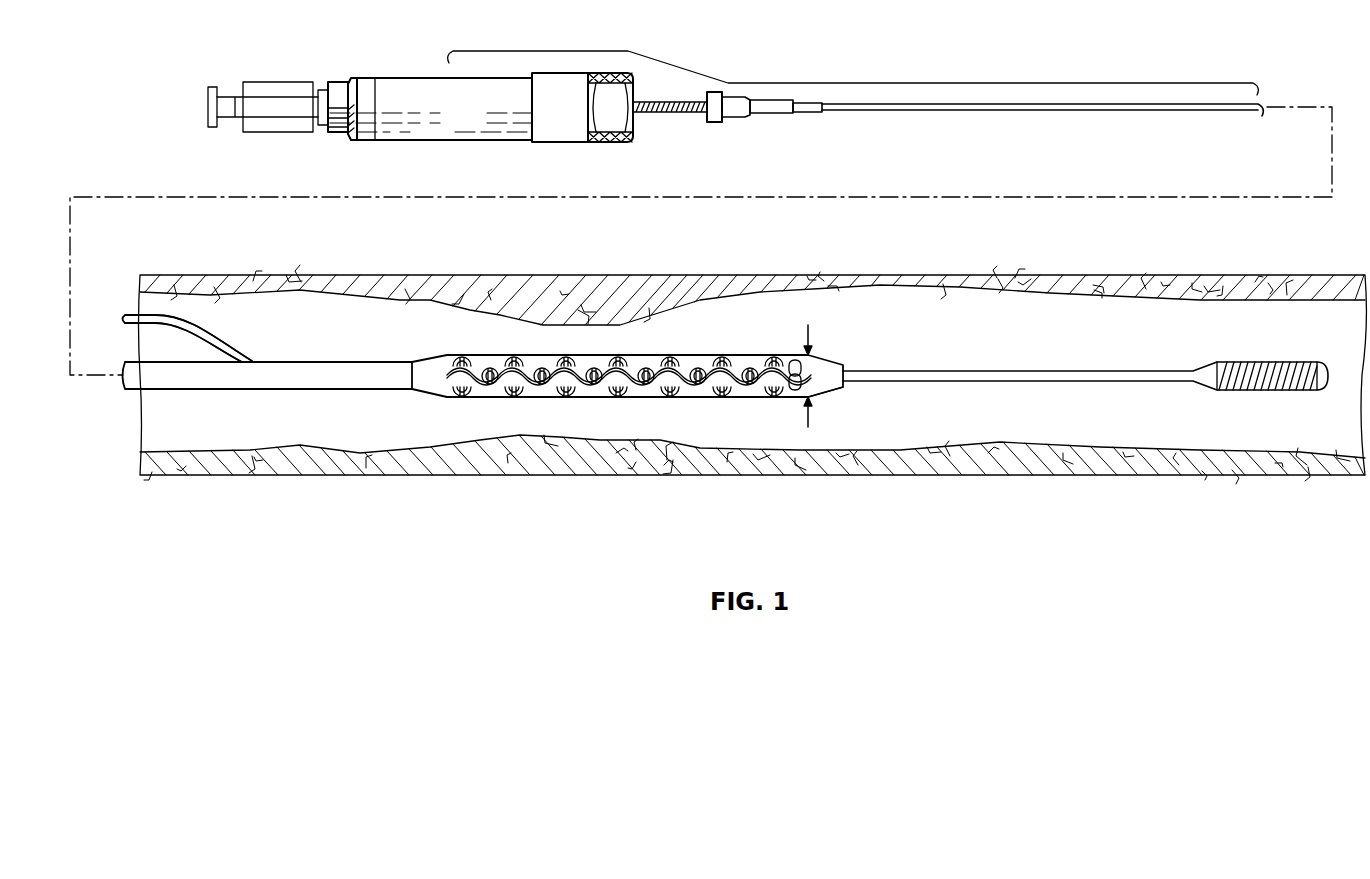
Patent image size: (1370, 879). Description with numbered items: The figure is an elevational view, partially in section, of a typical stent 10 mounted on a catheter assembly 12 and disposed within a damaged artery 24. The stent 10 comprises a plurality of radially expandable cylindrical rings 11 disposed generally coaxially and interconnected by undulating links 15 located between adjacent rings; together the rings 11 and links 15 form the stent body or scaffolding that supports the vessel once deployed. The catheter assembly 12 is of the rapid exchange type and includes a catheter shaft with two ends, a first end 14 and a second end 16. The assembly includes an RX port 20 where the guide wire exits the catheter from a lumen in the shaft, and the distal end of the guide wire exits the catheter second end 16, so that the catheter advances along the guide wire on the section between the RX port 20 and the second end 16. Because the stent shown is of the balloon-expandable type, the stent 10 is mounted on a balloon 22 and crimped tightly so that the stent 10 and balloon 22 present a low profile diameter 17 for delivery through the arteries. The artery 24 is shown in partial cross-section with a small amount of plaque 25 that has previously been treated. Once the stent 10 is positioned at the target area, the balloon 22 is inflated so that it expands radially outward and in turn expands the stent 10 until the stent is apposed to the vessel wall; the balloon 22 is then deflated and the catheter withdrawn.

The stent 10 is at (717, 343).
The cylindrical rings 11 is at (598, 380).
The catheter assembly 12 is at (735, 103).
The first end 14 is at (279, 82).
The undulating links 15 is at (490, 380).
The second end 16 is at (843, 362).
The stent diameter 17 is at (806, 328).
The RX port 20 is at (247, 358).
The balloon 22 is at (830, 394).
The blood vessel 24 is at (826, 273).
The plaque 25 is at (675, 443).